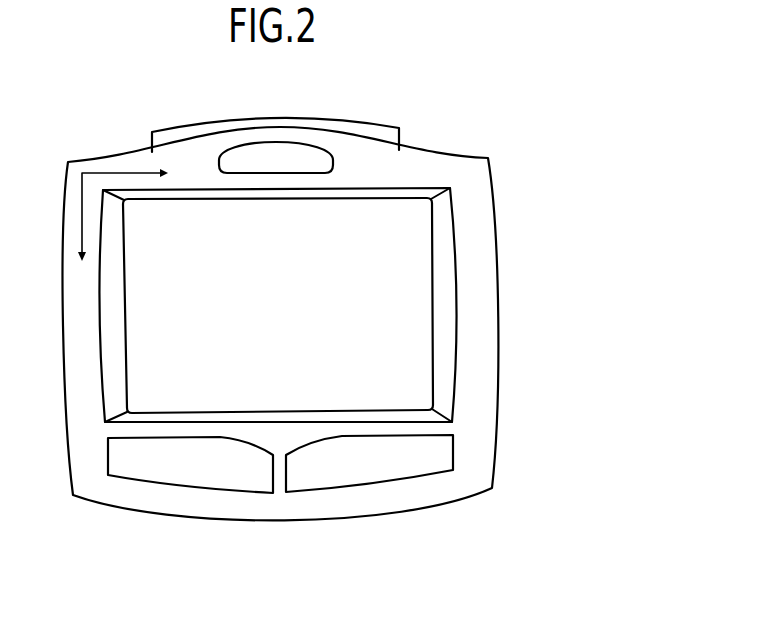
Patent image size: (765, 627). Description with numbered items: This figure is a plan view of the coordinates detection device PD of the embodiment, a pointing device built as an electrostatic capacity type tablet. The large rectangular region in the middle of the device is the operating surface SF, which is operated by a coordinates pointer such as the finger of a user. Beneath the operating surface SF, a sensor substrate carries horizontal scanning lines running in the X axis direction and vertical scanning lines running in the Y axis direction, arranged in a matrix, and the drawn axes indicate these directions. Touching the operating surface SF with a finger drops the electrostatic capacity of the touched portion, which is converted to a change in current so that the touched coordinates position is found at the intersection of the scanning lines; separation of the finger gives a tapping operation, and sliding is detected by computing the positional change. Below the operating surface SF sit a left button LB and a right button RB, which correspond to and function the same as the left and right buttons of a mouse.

The coordinates detection device PD is at (334, 107).
The operating surface SF is at (397, 263).
The left button LB is at (183, 457).
The right button RB is at (347, 457).